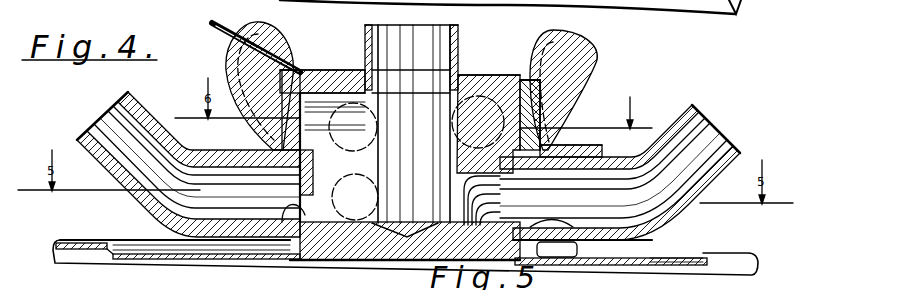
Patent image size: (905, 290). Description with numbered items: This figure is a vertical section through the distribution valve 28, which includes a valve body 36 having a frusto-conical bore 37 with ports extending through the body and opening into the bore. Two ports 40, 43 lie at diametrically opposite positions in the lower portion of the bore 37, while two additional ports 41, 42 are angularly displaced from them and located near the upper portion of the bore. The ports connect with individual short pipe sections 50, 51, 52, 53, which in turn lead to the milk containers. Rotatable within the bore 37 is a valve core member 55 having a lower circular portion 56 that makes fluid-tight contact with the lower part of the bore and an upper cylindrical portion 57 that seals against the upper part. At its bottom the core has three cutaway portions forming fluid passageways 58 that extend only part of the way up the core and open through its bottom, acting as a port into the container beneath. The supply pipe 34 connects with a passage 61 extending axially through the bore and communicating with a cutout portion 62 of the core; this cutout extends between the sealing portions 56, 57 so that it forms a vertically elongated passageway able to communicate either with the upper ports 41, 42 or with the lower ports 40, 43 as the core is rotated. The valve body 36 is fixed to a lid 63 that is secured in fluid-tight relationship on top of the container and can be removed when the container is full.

The distribution valve 28 is at (594, 80).
The supply pipe 34 is at (452, 27).
The valve body 36 is at (556, 140).
The frusto-conical bore 37 is at (312, 72).
The port 40 is at (583, 243).
The port 41 is at (498, 83).
The port 42 is at (344, 72).
The port 43 is at (300, 216).
The pipe section 50 is at (682, 108).
The pipe section 51 is at (566, 43).
The pipe section 52 is at (280, 38).
The pipe section 53 is at (150, 120).
The valve core member 55 is at (565, 100).
The lower circular portion 56 is at (318, 262).
The upper cylindrical portion 57 is at (483, 77).
The fluid passageways 58 is at (410, 250).
The passage 61 is at (458, 43).
The cutout portion 62 is at (341, 161).
The lid 63 is at (688, 258).